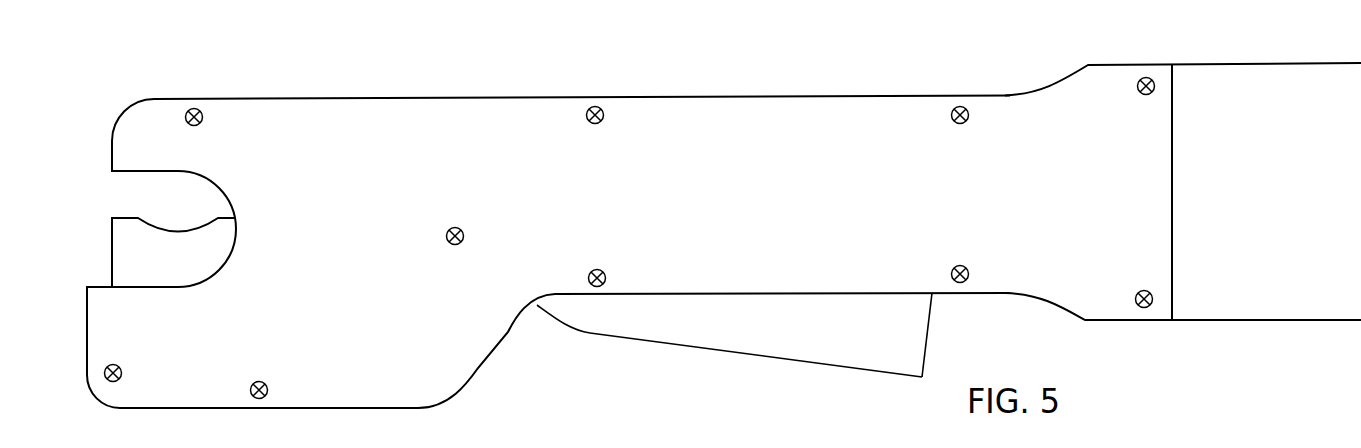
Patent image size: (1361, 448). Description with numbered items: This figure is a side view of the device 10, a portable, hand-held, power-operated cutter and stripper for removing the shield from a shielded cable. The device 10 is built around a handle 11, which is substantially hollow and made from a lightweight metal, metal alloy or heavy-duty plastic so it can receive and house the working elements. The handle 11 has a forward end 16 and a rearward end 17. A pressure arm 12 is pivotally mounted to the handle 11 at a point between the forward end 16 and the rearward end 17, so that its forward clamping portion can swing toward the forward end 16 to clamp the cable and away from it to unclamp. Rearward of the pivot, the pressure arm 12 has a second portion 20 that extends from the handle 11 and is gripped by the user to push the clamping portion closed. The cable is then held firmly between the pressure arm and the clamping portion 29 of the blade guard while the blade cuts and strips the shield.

The device 10 is at (880, 84).
The handle 11 is at (787, 107).
The pressure arm 12 is at (734, 352).
The forward end 16 is at (312, 396).
The rearward end 17 is at (1303, 303).
The second portion 20 is at (704, 348).
The clamping portion 29 is at (138, 217).